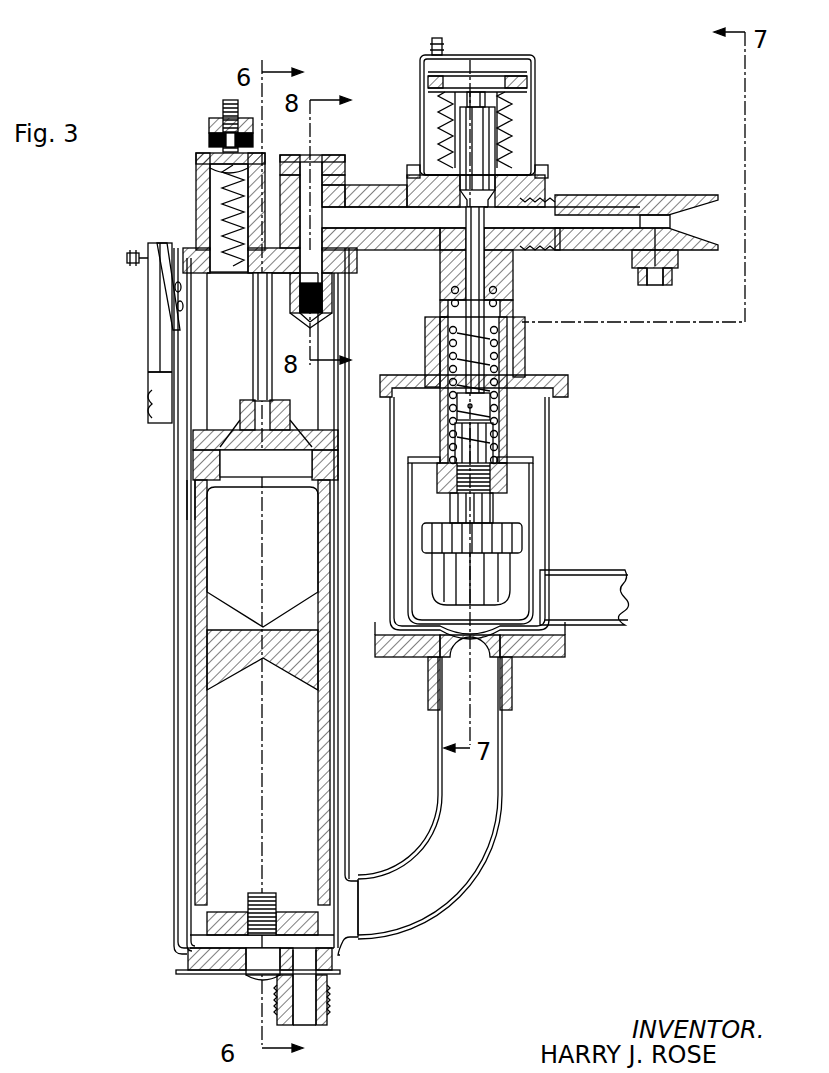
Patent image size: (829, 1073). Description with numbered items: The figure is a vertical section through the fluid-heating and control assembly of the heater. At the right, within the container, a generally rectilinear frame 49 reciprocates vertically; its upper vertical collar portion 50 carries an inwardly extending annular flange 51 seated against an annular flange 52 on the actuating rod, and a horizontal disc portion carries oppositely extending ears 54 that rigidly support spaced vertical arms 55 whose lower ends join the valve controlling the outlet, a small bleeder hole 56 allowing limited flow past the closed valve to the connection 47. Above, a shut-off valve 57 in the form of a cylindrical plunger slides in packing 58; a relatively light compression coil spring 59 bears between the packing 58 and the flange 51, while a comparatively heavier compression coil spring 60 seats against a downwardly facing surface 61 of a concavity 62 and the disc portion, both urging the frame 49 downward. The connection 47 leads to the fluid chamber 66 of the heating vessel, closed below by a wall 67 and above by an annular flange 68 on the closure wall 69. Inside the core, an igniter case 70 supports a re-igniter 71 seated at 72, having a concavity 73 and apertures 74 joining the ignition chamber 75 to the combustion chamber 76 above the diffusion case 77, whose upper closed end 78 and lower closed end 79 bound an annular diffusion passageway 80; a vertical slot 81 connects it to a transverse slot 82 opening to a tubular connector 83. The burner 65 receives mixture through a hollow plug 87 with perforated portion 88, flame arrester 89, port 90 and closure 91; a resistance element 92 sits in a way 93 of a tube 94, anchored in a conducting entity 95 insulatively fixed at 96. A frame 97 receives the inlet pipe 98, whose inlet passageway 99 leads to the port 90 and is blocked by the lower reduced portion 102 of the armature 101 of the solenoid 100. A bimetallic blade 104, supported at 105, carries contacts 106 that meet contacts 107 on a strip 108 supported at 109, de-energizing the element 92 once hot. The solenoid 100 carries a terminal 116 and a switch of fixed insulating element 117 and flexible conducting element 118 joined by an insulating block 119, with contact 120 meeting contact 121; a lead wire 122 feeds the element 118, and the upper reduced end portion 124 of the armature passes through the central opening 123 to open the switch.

The connection 47 is at (485, 835).
The rectilinear frame 49 is at (520, 545).
The upper vertical collar portion 50 is at (490, 452).
The inwardly extending annular flange 51 is at (488, 428).
The annular flange 52 is at (457, 418).
The oppositely extending ears 54 is at (410, 465).
The vertical arms 55 is at (550, 503).
The bleeder hole 56 is at (478, 660).
The shut-off valve 57 is at (508, 285).
The packing 58 is at (512, 302).
The compression coil spring 59 is at (497, 356).
The compression coil spring 60 is at (520, 375).
The downwardly facing surface 61 is at (445, 327).
The concavity 62 is at (446, 358).
The burner 65 is at (245, 320).
The fluid chamber 66 is at (190, 470).
The wall 67 is at (197, 968).
The annular flange 68 is at (352, 255).
The closure wall 69 is at (196, 233).
The igniter case 70 is at (200, 510).
The re-igniter 71 is at (252, 427).
The seat 72 is at (320, 442).
The concavity 73 is at (262, 398).
The apertures 74 is at (295, 455).
The ignition chamber 75 is at (345, 375).
The combustion chamber 76 is at (235, 565).
The diffusion case 77 is at (195, 752).
The upper closed end 78 is at (292, 678).
The lower closed end 79 is at (225, 912).
The annular diffusion passageway 80 is at (330, 792).
The vertical slot 81 is at (345, 878).
The transverse slot 82 is at (252, 962).
The tubular connector 83 is at (327, 998).
The hollow plug 87 is at (322, 176).
The perforated portion 88 is at (319, 333).
The flame arrester 89 is at (320, 297).
The port 90 is at (330, 205).
The closure 91 is at (312, 172).
The resistance element 92 is at (222, 200).
The way 93 is at (215, 225).
The tube 94 is at (200, 178).
The conducting entity 95 is at (209, 127).
The insulating fixing 96 is at (209, 143).
The frame 97 is at (466, 232).
The inlet pipe 98 is at (600, 198).
The inlet passageway 99 is at (378, 222).
The solenoid 100 is at (512, 128).
The armature 101 is at (495, 150).
The lower reduced portion 102 is at (444, 270).
The bimetallic blade 104 is at (172, 340).
The insulating support 105 is at (178, 422).
The contacts 106 is at (166, 275).
The contacts 107 is at (157, 262).
The strip 108 is at (160, 360).
The support 109 is at (150, 400).
The terminal 116 is at (438, 45).
The fixed insulating element 117 is at (512, 98).
The flexible conducting element 118 is at (505, 75).
The insulating block 119 is at (428, 80).
The contact 120 is at (520, 85).
The contact 121 is at (520, 92).
The lead wire 122 is at (420, 62).
The central opening 123 is at (470, 90).
The upper reduced end portion 124 is at (462, 98).